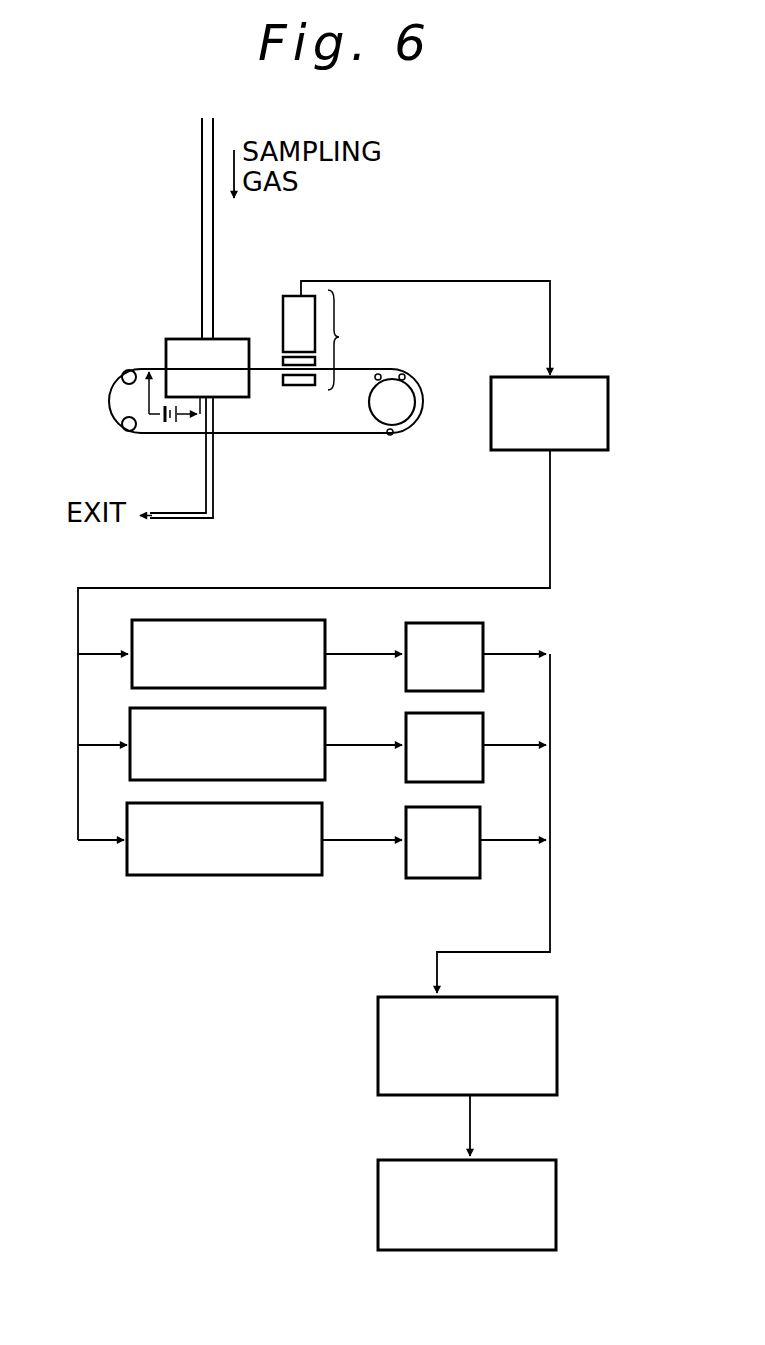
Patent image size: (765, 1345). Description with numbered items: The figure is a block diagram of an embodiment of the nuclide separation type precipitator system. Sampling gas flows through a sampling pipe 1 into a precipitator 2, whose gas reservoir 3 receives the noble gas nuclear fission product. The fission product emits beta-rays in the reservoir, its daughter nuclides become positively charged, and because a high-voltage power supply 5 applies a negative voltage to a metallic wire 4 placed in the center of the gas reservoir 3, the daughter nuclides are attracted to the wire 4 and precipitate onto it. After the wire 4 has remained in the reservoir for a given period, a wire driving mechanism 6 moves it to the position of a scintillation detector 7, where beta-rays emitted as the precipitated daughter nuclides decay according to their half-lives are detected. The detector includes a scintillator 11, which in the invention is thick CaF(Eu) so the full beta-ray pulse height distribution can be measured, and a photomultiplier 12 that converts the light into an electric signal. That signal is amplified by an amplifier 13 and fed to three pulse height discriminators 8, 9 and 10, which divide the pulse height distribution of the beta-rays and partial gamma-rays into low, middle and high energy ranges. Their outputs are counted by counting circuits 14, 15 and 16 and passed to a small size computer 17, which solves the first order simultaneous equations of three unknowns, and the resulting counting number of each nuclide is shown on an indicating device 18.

The sampling pipe 1 is at (202, 189).
The precipitator 2 is at (95, 418).
The gas reservoir of precipitator 3 is at (186, 348).
The metallic wire 4 is at (182, 367).
The high-voltage power supply 5 is at (166, 432).
The wire driving mechanism 6 is at (400, 407).
The scintillation detector 7 is at (344, 340).
The pulse height discriminator for low energy range 8 is at (324, 818).
The pulse height discriminator for middle energy range 9 is at (327, 720).
The pulse height discriminator for high energy range 10 is at (327, 628).
The scintillator 11 is at (299, 386).
The photomultiplier 12 is at (283, 318).
The amplifier 13 is at (608, 404).
The counting circuit for low energy range 14 is at (482, 822).
The counting circuit for middle energy range 15 is at (485, 727).
The counting circuit for high energy range 16 is at (485, 637).
The small size computer 17 is at (557, 1045).
The indicating device 18 is at (556, 1200).